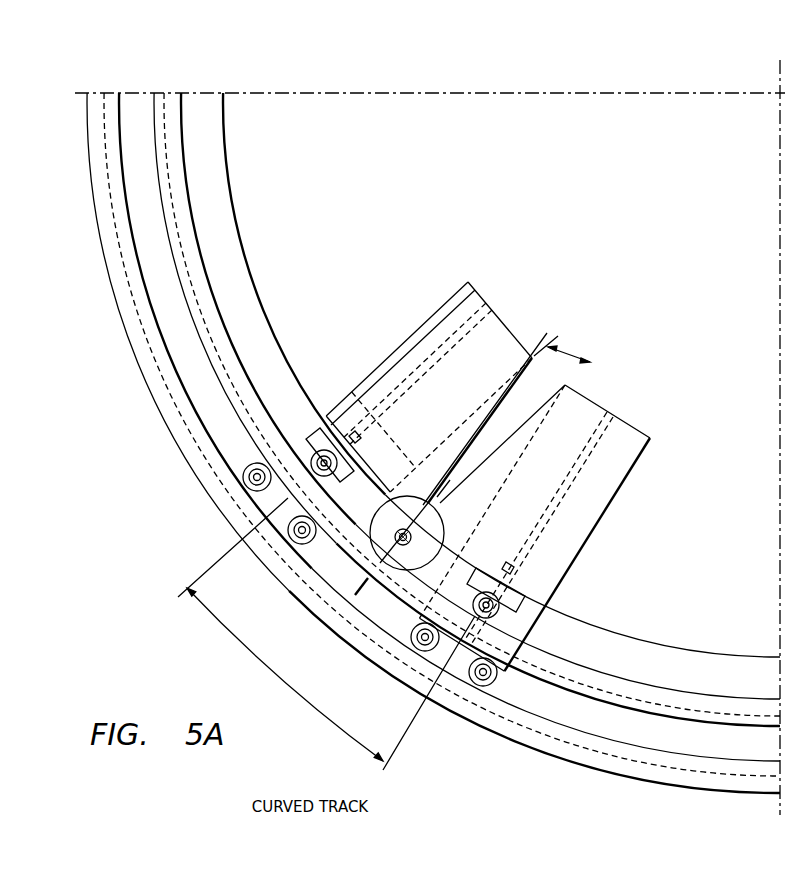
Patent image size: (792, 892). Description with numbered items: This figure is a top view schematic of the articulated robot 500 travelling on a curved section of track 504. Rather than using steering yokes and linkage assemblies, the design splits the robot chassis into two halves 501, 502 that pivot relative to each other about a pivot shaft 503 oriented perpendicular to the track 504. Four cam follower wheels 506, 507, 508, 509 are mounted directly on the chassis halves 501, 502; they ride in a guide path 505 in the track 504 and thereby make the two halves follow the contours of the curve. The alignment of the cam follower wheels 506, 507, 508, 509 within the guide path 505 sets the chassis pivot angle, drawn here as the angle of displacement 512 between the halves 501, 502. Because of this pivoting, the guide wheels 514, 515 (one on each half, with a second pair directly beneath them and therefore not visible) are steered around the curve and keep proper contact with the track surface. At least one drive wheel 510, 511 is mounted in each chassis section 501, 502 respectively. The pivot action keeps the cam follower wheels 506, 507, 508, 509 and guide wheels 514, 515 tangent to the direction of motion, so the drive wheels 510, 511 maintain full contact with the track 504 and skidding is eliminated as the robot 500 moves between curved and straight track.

The articulated robot 500 is at (405, 279).
The robot chassis half 501 is at (478, 305).
The robot chassis half 502 is at (620, 432).
The pivot shaft 503 is at (440, 524).
The track 504 is at (695, 668).
The guide path 505 is at (577, 735).
The cam follower wheel 506 is at (243, 478).
The cam follower wheel 507 is at (290, 540).
The cam follower wheel 508 is at (425, 666).
The cam follower wheel 509 is at (500, 708).
The drive wheel 510 is at (312, 445).
The drive wheel 511 is at (525, 620).
The angle of displacement 512 is at (578, 350).
The guide wheel 514 is at (367, 465).
The guide wheel 515 is at (556, 590).